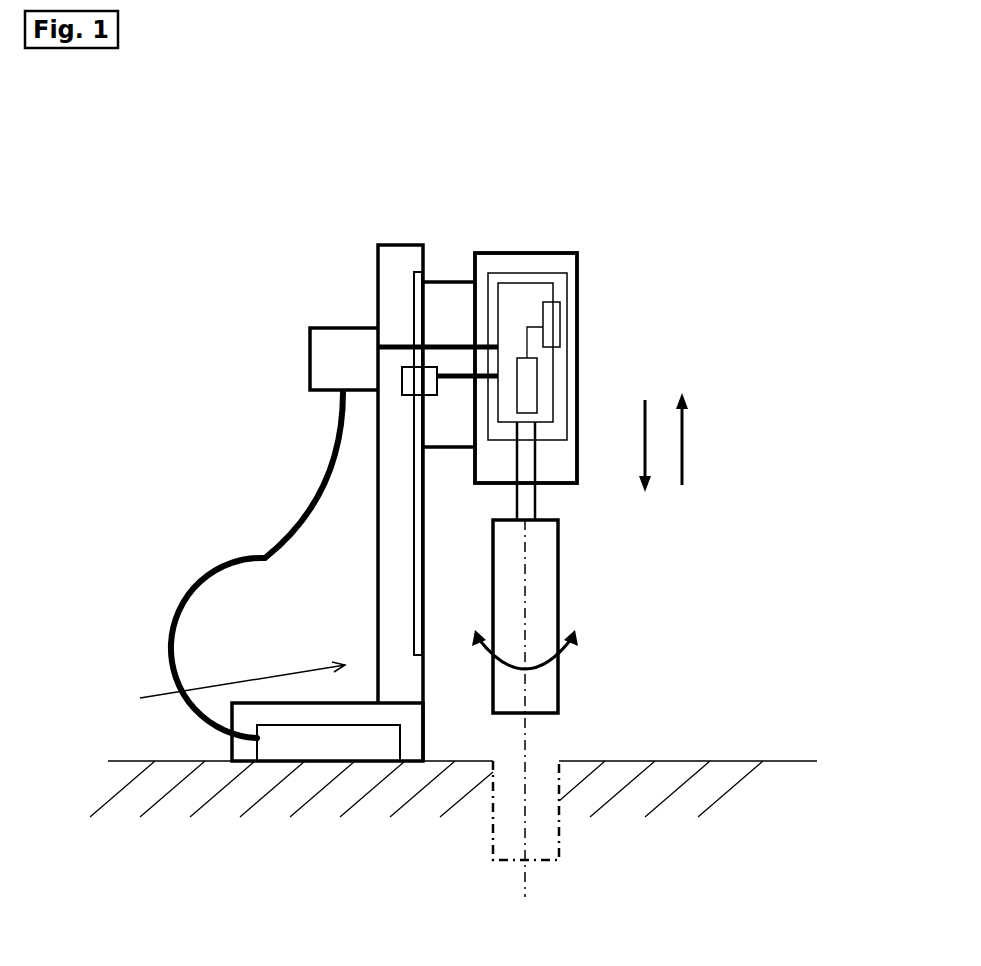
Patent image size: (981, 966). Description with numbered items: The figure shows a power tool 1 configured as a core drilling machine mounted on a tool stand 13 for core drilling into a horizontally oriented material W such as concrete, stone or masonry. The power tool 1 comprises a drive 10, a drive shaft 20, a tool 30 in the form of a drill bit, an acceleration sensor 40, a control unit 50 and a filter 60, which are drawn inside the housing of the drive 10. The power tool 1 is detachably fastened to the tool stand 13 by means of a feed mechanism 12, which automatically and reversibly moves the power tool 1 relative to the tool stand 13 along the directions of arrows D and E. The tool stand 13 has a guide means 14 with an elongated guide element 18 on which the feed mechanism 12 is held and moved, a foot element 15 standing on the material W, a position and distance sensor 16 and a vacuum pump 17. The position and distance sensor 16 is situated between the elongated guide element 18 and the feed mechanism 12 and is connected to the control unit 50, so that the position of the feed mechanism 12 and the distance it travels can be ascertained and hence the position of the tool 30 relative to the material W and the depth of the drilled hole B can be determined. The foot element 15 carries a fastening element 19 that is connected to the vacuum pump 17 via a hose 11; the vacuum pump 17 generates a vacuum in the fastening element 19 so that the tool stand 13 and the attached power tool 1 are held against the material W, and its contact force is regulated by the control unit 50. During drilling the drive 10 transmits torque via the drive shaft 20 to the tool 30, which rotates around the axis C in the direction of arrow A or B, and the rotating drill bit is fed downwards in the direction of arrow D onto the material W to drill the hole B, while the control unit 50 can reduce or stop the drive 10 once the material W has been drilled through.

The power tool 1 is at (507, 255).
The drive 10 is at (522, 277).
The hose 11 is at (187, 607).
The feed mechanism 12 is at (442, 290).
The tool stand 13 is at (226, 688).
The guide means 14 is at (395, 255).
The foot element 15 is at (285, 713).
The position and distance sensor 16 is at (410, 373).
The vacuum pump 17 is at (322, 355).
The elongated guide element 18 is at (418, 511).
The fastening element 19 is at (358, 743).
The drive shaft 20 is at (540, 483).
The tool 30 is at (542, 583).
The acceleration sensor 40 is at (553, 325).
The control unit 50 is at (528, 293).
The filter 60 is at (540, 380).
The arrow A is at (527, 651).
The arrow B / drilled hole B is at (547, 822).
The axis C is at (532, 726).
The arrow D is at (627, 446).
The arrow E is at (696, 439).
The material W is at (453, 803).